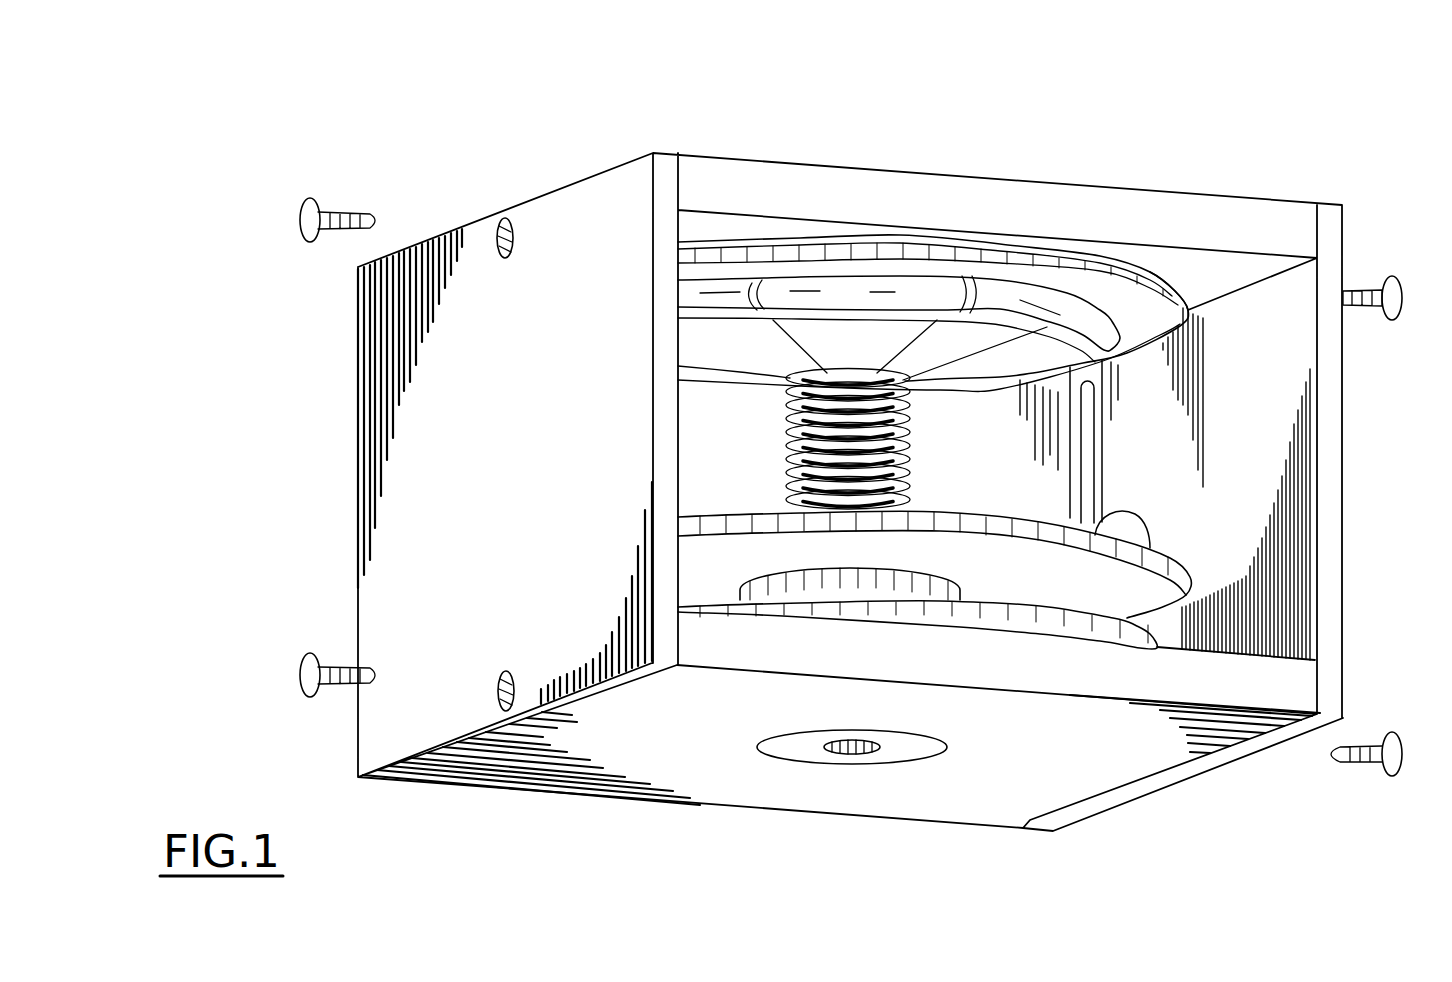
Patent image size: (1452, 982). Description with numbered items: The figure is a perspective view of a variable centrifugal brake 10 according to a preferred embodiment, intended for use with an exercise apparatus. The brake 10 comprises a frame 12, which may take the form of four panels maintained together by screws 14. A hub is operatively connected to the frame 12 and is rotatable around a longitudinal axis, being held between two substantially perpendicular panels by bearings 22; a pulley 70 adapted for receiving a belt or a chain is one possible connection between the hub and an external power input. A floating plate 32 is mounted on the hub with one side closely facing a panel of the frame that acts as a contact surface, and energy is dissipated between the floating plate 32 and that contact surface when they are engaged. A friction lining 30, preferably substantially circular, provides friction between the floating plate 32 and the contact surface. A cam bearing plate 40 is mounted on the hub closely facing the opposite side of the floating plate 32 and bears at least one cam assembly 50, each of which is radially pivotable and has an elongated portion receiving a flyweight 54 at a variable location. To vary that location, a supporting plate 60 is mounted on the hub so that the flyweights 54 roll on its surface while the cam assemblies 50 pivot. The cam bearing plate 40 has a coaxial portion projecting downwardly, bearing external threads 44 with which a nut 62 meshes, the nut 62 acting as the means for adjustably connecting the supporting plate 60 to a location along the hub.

The variable centrifugal brake 10 is at (1328, 110).
The frame 12 is at (612, 205).
The screws 14 is at (302, 226).
The bearings 22 is at (889, 752).
The friction lining 30 is at (1120, 246).
The floating plate 32 is at (1195, 300).
The cam bearing plate 40 is at (965, 396).
The external threads 44 is at (790, 434).
The cam assembly 50 is at (1100, 382).
The flyweight 54 is at (1135, 517).
The supporting plate 60 is at (1135, 615).
The nut 62 is at (945, 580).
The pulley 70 is at (1157, 647).